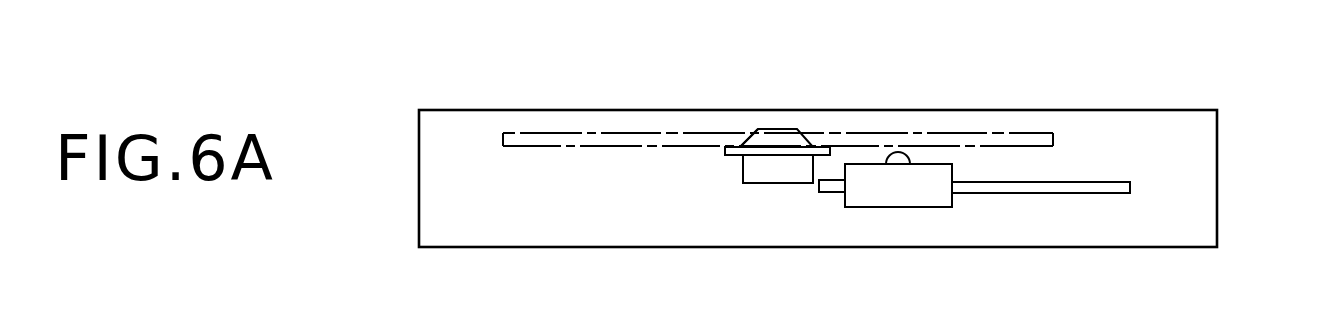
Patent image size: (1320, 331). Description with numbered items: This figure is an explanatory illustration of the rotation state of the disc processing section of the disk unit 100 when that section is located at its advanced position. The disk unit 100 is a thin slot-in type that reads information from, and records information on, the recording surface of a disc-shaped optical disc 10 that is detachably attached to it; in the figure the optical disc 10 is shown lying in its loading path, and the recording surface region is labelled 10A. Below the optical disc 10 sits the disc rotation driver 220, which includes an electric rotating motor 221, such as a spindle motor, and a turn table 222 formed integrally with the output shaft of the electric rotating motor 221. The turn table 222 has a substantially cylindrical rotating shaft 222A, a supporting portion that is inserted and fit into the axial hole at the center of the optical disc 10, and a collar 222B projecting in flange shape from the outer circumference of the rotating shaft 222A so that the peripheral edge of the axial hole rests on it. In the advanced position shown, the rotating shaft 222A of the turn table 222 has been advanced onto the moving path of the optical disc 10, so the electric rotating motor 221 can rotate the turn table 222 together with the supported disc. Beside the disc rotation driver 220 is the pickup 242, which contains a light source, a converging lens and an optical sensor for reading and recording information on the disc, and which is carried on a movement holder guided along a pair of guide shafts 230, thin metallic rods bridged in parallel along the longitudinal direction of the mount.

The disk unit 100 is at (1085, 111).
The optical disc 10 is at (970, 135).
The disk recording surface 10A is at (1037, 148).
The disc rotation driver 220 is at (778, 190).
The electric rotating motor 221 is at (757, 177).
The turn table 222 is at (725, 152).
The rotating shaft 222A is at (788, 131).
The collar 222B is at (740, 146).
The pickup 242 is at (915, 195).
The guide shafts 230 is at (1070, 191).